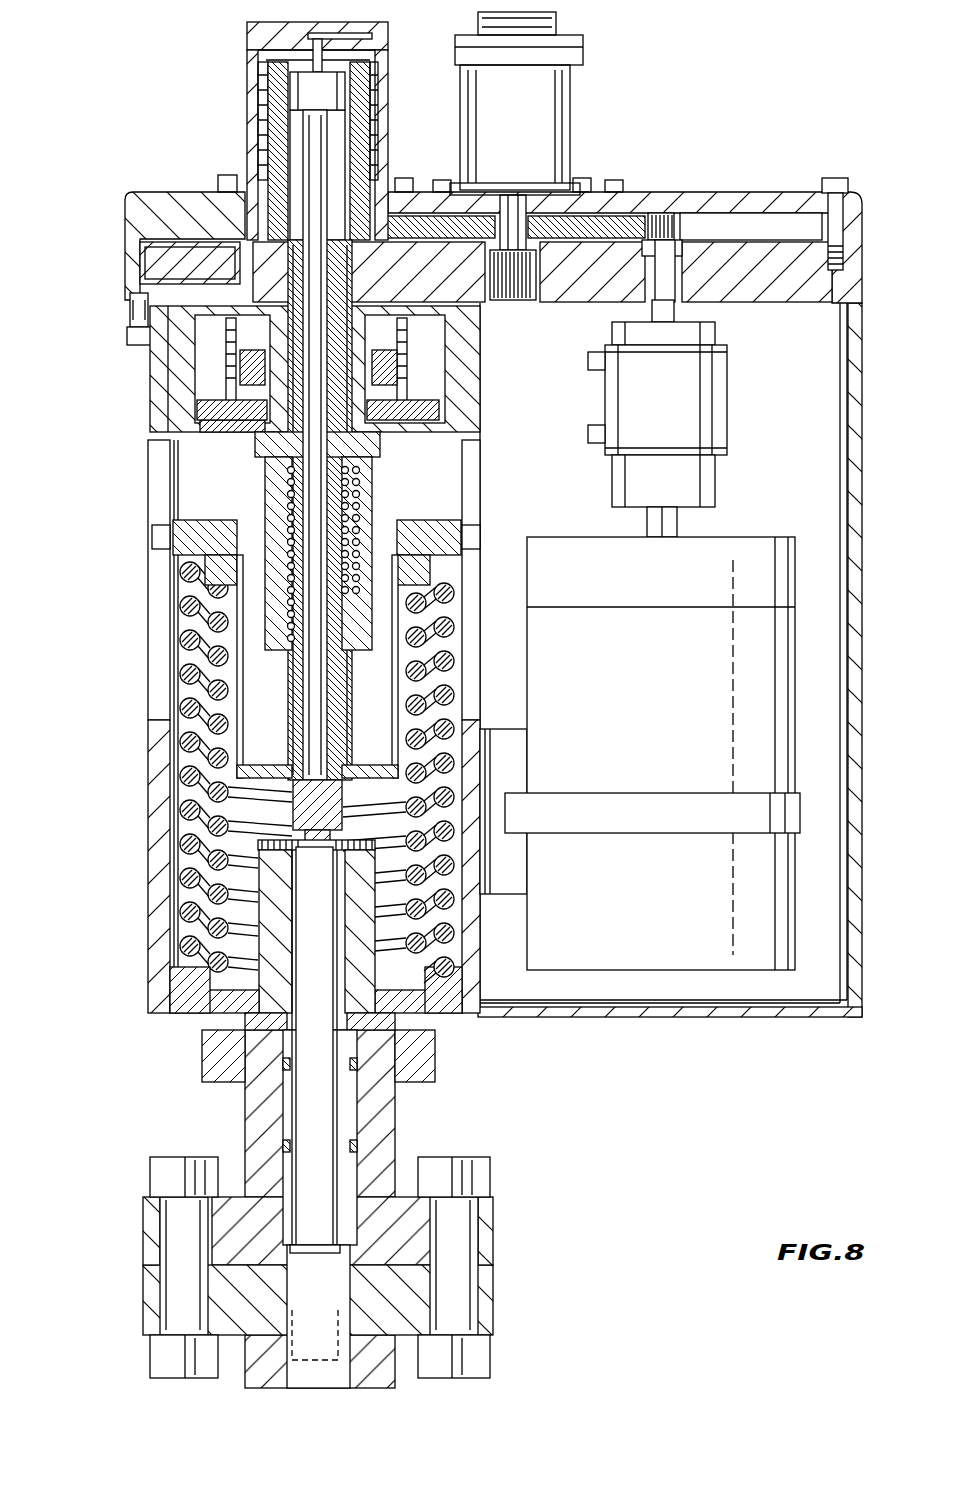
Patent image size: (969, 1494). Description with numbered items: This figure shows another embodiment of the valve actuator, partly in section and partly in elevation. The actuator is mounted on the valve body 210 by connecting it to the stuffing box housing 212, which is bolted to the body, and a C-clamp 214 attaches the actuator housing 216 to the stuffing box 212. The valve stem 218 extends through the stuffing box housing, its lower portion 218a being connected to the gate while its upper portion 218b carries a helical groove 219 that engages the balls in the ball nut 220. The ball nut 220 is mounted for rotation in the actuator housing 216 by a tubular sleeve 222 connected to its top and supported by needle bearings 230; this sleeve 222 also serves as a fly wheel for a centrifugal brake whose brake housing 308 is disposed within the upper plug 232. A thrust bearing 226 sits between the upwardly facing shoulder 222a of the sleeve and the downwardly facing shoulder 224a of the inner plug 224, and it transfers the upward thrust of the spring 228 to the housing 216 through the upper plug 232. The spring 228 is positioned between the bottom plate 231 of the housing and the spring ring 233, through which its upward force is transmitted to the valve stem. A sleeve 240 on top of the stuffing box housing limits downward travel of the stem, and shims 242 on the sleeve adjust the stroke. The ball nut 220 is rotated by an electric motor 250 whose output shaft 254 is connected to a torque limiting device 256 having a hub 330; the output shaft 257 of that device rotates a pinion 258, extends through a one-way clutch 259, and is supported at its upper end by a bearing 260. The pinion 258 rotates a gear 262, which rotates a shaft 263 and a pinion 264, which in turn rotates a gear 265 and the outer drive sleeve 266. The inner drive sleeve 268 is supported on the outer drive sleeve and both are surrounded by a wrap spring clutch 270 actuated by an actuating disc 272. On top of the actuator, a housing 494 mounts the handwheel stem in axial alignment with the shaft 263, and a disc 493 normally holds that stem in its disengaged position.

The valve body 210 is at (488, 1297).
The stuffing box housing 212 is at (380, 1130).
The C-clamp 214 is at (437, 1058).
The actuator housing 216 is at (150, 895).
The valve stem 218 is at (312, 1000).
The lower portion of valve stem 218a is at (308, 1110).
The upper portion of valve stem 218b is at (295, 678).
The helical groove 219 is at (362, 682).
The ball nut 220 is at (368, 488).
The tubular sleeve 222 is at (482, 397).
The upwardly facing shoulder 222a is at (480, 413).
The inner plug 224 is at (213, 348).
The downwardly facing shoulder 224a is at (480, 370).
The thrust bearing 226 is at (215, 372).
The spring 228 is at (187, 778).
The needle bearings 230 is at (470, 348).
The bottom plate 231 is at (182, 990).
The upper plug 232 is at (160, 315).
The spring ring 233 is at (210, 520).
The sleeve 240 is at (405, 1005).
The shims 242 is at (300, 815).
The electric motor 250 is at (660, 718).
The output shaft 254 is at (677, 523).
The torque limiting device 256 is at (732, 400).
The output shaft 257 is at (680, 312).
The pinion 258 is at (715, 192).
The one-way clutch 259 is at (680, 247).
The bearing 260 is at (670, 205).
The gear 262 is at (583, 230).
The shaft 263 is at (530, 203).
The pinion 264 is at (535, 265).
The gear 265 is at (190, 238).
The outer drive sleeve 266 is at (368, 182).
The inner drive sleeve 268 is at (287, 157).
The wrap spring clutch 270 is at (260, 90).
The actuating disc 272 is at (352, 62).
The brake housing 308 is at (187, 415).
The hub 330 is at (720, 337).
The disc 493 is at (585, 50).
The housing 494 is at (568, 112).